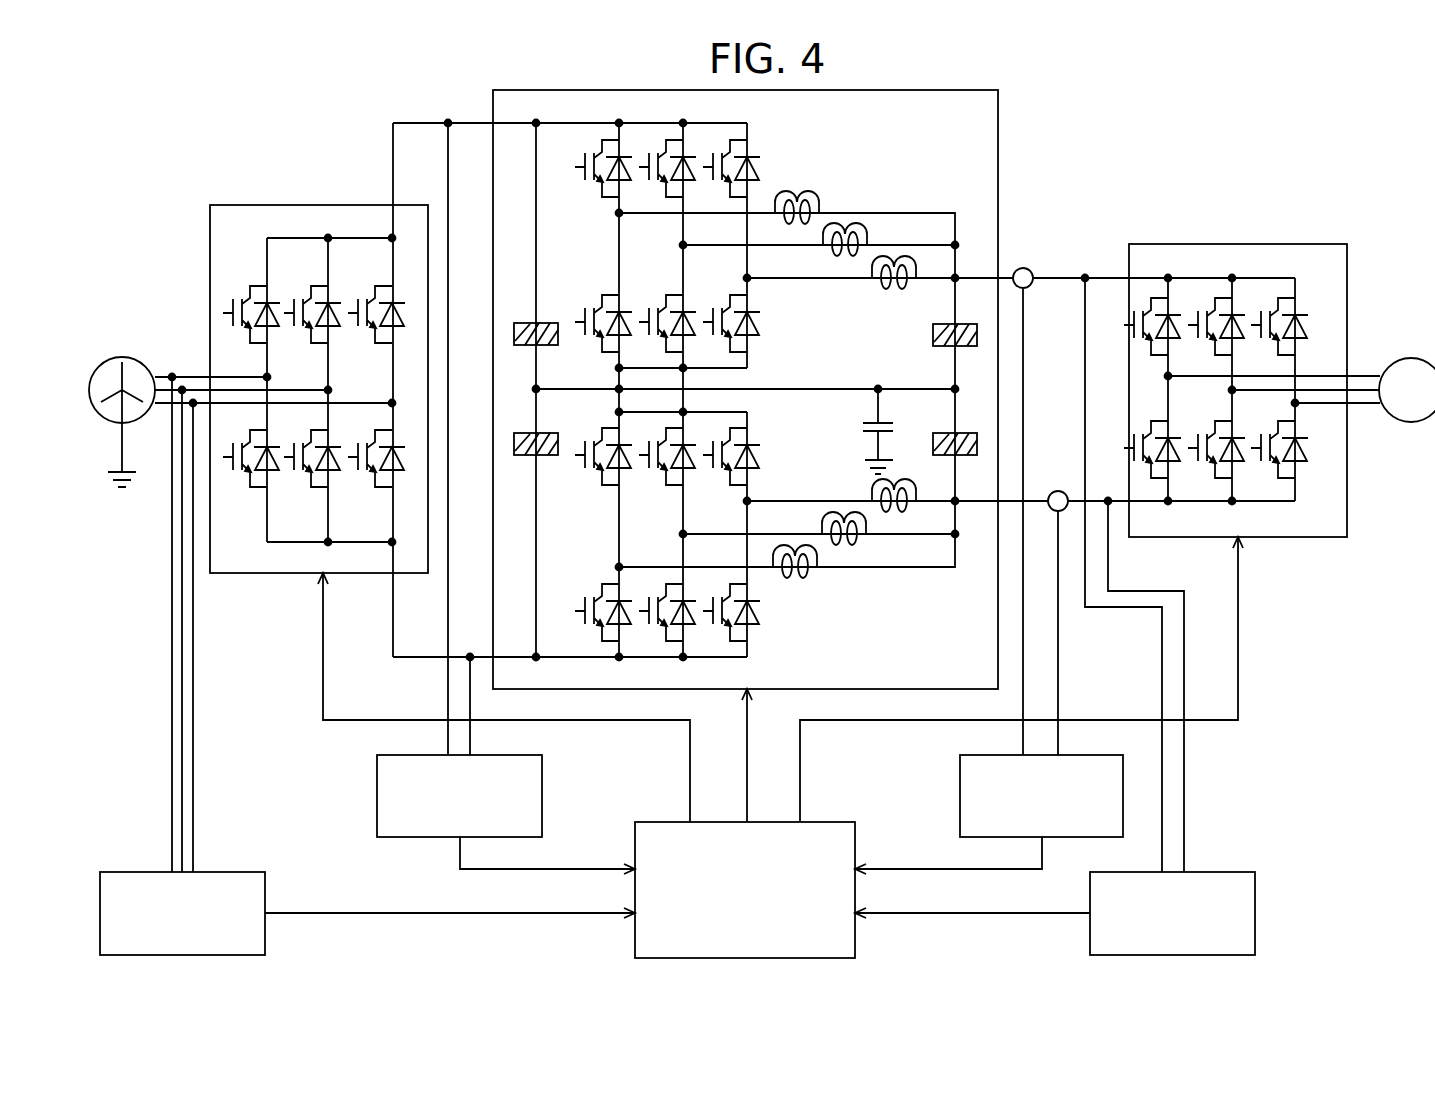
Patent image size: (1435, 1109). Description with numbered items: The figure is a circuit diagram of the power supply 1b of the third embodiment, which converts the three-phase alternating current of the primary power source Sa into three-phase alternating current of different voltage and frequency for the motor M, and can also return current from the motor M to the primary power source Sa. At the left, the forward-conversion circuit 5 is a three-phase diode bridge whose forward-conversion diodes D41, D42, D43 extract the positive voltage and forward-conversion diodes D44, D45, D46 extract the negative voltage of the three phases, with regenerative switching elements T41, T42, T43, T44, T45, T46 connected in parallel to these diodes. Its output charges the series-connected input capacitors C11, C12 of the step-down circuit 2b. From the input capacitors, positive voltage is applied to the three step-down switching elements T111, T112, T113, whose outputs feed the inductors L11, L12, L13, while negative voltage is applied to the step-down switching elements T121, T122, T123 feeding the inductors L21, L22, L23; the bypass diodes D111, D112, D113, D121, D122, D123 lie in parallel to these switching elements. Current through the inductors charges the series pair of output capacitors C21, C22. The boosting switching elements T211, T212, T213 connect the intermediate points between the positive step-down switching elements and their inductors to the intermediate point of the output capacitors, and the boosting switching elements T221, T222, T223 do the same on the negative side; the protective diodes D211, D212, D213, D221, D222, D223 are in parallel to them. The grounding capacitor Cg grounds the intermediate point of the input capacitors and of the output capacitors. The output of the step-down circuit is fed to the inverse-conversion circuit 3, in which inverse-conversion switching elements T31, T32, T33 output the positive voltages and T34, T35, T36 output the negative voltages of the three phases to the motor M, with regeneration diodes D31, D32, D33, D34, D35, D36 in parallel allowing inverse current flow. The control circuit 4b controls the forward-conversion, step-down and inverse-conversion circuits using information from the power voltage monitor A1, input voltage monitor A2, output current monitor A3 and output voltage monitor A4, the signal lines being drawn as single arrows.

The power supply 1b is at (1270, 185).
The step-down circuit 2b is at (998, 167).
The inverse-conversion circuit 3 is at (1129, 258).
The control circuit 4b is at (660, 822).
The forward-conversion circuit 5 is at (210, 228).
The primary power source Sa is at (120, 355).
The motor M is at (1410, 358).
The power voltage monitor A1 is at (405, 838).
The input voltage monitor A2 is at (960, 796).
The output current monitor A3 is at (1228, 872).
The output voltage monitor A4 is at (235, 872).
The input capacitor C11 is at (540, 318).
The input capacitor C12 is at (540, 462).
The output capacitor C21 is at (940, 350).
The output capacitor C22 is at (945, 426).
The grounding capacitor Cg is at (890, 440).
The inductor L11 is at (812, 203).
The inductor L12 is at (838, 252).
The inductor L13 is at (895, 290).
The inductor L21 is at (810, 582).
The inductor L22 is at (830, 530).
The inductor L23 is at (875, 490).
The step-down switching element T111 is at (575, 167).
The step-down switching element T112 is at (639, 167).
The step-down switching element T113 is at (703, 167).
The boosting switching element T211 is at (575, 322).
The boosting switching element T212 is at (639, 322).
The boosting switching element T213 is at (703, 322).
The boosting switching element T221 is at (575, 457).
The boosting switching element T222 is at (639, 457).
The boosting switching element T223 is at (703, 457).
The step-down switching element T121 is at (575, 613).
The step-down switching element T122 is at (639, 613).
The step-down switching element T123 is at (703, 613).
The bypass diode D111 is at (628, 183).
The bypass diode D112 is at (692, 183).
The bypass diode D113 is at (760, 172).
The protective diode D211 is at (607, 336).
The protective diode D212 is at (693, 337).
The protective diode D213 is at (760, 322).
The protective diode D221 is at (607, 445).
The protective diode D222 is at (693, 444).
The protective diode D223 is at (760, 457).
The bypass diode D121 is at (628, 601).
The bypass diode D122 is at (692, 601).
The bypass diode D123 is at (760, 615).
The regenerative switching element T41 is at (223, 313).
The regenerative switching element T42 is at (284, 313).
The regenerative switching element T43 is at (348, 313).
The regenerative switching element T44 is at (223, 457).
The regenerative switching element T45 is at (284, 457).
The regenerative switching element T46 is at (348, 457).
The forward-conversion diode D41 is at (276, 328).
The forward-conversion diode D42 is at (337, 328).
The forward-conversion diode D43 is at (401, 330).
The forward-conversion diode D44 is at (276, 472).
The forward-conversion diode D45 is at (337, 472).
The forward-conversion diode D46 is at (401, 473).
The inverse-conversion switching element T31 is at (1124, 325).
The inverse-conversion switching element T32 is at (1188, 325).
The inverse-conversion switching element T33 is at (1251, 325).
The inverse-conversion switching element T34 is at (1124, 449).
The inverse-conversion switching element T35 is at (1188, 449).
The inverse-conversion switching element T36 is at (1251, 449).
The regeneration diode D31 is at (1180, 337).
The regeneration diode D32 is at (1244, 337).
The regeneration diode D33 is at (1307, 337).
The regeneration diode D34 is at (1180, 438).
The regeneration diode D35 is at (1244, 438).
The regeneration diode D36 is at (1307, 438).